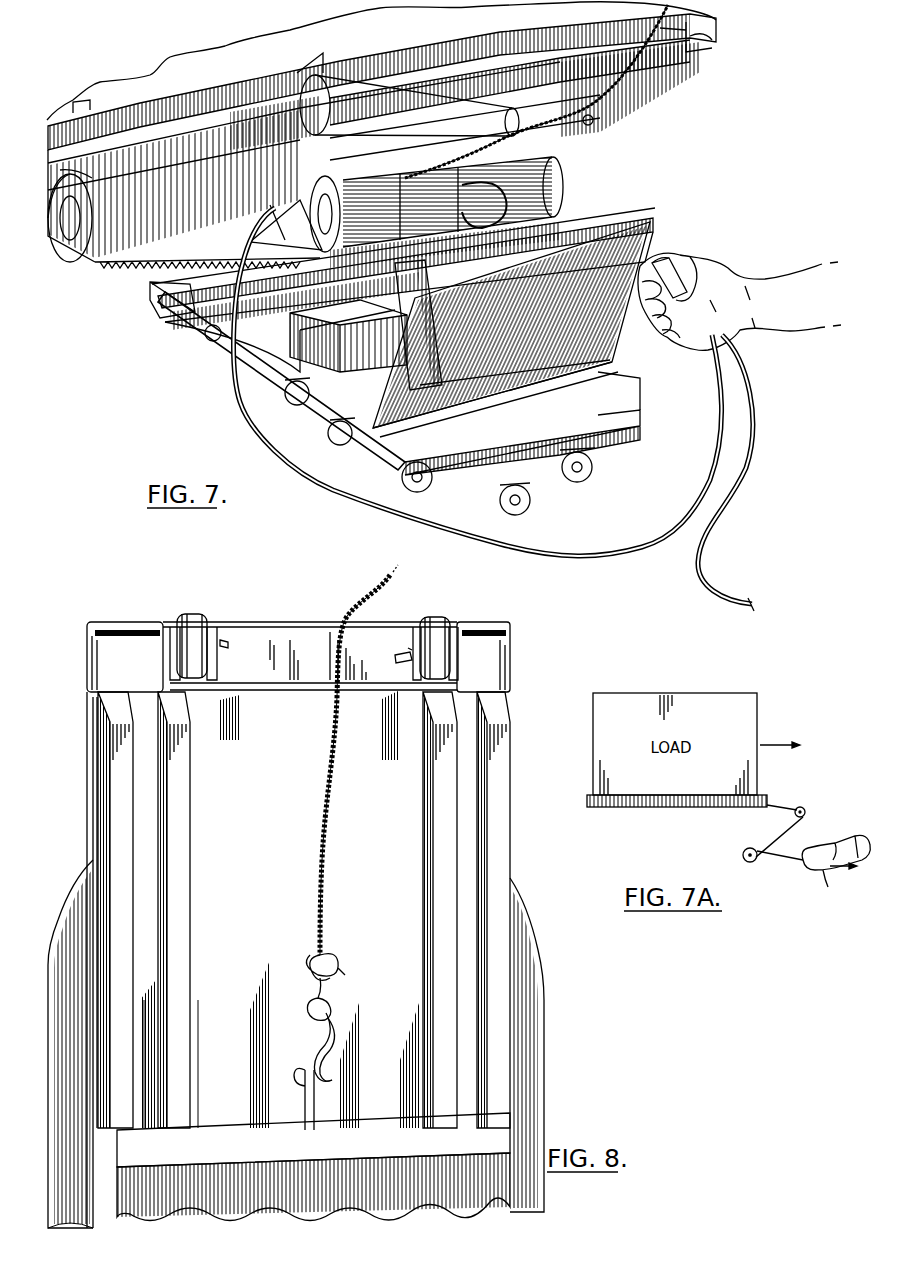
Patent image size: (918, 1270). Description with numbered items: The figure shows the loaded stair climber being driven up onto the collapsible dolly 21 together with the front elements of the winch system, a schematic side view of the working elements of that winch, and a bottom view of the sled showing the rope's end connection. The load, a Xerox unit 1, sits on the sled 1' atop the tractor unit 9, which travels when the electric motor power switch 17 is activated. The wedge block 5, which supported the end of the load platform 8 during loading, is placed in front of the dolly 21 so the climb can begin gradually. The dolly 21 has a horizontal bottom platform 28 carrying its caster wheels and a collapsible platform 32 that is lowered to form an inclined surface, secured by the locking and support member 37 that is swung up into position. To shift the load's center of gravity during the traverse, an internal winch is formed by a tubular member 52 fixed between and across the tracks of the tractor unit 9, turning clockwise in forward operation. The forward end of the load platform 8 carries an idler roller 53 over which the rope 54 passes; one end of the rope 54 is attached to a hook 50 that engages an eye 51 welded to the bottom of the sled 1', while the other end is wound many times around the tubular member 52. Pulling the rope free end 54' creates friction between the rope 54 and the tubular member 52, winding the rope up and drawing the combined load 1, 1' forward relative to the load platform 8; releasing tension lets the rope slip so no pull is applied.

In FIG. 7, the load unit 1 is at (381, 135).
In FIG. 8, the sled 1' is at (296, 903).
In FIG. 7, the wedge block 5 is at (150, 302).
In FIG. 7, the load platform 8 is at (54, 150).
In FIG. 7, the tractor unit 9 is at (110, 268).
In FIG. 7, the electric motor power switch 17 is at (677, 283).
In FIG. 7, the collapsible dolly 21 is at (638, 208).
In FIG. 7, the horizontal bottom platform 28 is at (283, 372).
In FIG. 7, the collapsible platform 32 is at (370, 305).
In FIG. 7, the locking and support member 37 is at (606, 347).
In FIG. 8, the hook 50 is at (307, 1006).
In FIG. 8, the eye 51 is at (304, 1106).
In FIG. 7, the tubular winch member 52 is at (556, 208).
In FIG. 7A, the tubular winch member 52 is at (744, 852).
In FIG. 7, the idler roller 53 is at (588, 128).
In FIG. 7A, the idler roller 53 is at (806, 811).
In FIG. 7, the rope 54 is at (512, 147).
In FIG. 7A, the rope 54 is at (781, 816).
In FIG. 8, the rope 54 is at (331, 772).
In FIG. 7, the rope free end 54' is at (635, 72).
In FIG. 7A, the rope free end 54' is at (780, 870).